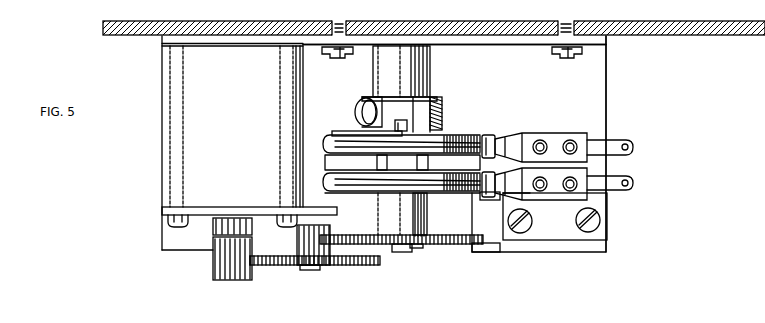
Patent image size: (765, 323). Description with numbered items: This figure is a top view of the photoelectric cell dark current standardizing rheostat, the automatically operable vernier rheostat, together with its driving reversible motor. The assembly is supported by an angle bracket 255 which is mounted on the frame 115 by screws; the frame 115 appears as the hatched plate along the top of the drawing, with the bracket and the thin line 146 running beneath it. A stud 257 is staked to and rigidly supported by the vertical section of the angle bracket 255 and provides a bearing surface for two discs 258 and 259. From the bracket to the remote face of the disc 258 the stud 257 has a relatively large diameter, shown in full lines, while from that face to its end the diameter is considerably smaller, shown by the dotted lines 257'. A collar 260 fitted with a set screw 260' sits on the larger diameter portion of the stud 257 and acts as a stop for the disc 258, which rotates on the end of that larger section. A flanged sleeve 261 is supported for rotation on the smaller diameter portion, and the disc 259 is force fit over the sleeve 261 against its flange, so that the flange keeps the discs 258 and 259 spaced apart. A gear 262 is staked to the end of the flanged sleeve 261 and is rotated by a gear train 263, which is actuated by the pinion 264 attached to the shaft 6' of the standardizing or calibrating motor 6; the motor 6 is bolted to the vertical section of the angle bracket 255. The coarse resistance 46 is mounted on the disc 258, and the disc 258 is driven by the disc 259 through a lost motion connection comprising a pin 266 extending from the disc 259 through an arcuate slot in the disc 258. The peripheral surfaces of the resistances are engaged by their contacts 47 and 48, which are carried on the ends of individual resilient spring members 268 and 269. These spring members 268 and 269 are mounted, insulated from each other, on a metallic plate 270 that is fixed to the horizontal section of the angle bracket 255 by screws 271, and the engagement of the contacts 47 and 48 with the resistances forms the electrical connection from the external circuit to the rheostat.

The frame 115 is at (136, 36).
The standardizing or calibrating motor 6 is at (238, 143).
The shaft 6' is at (221, 233).
The support line 146 is at (495, 42).
The angle bracket 255 is at (598, 83).
The stud 257 is at (384, 89).
The smaller diameter portion of stud 257' is at (385, 214).
The disc 258 is at (353, 132).
The disc 259 is at (370, 173).
The collar 260 is at (452, 113).
The set screw 260' is at (353, 108).
The flanged sleeve 261 is at (428, 163).
The gear 262 is at (443, 247).
The gear train 263 is at (364, 272).
The pinion 264 is at (213, 268).
The pin 266 is at (412, 127).
The resilient spring member 268 is at (502, 133).
The resilient spring member 269 is at (517, 197).
The metallic plate 270 is at (605, 205).
The screws 271 is at (578, 222).
The coarse resistance 46 is at (440, 135).
The contact 47 is at (488, 197).
The contact 48 is at (487, 133).